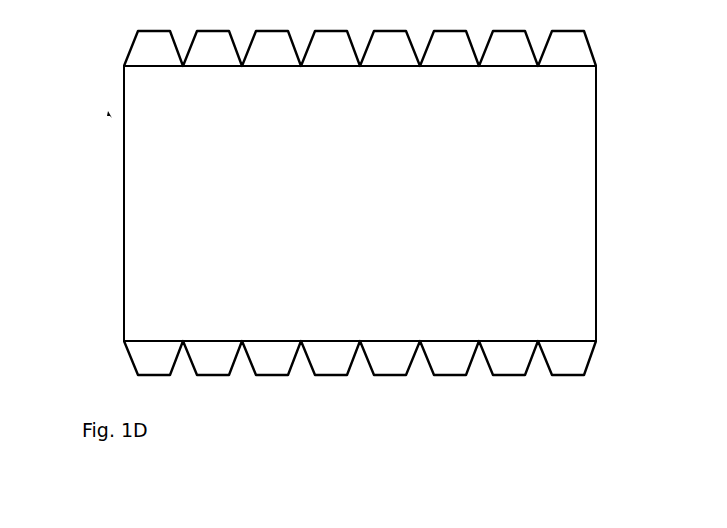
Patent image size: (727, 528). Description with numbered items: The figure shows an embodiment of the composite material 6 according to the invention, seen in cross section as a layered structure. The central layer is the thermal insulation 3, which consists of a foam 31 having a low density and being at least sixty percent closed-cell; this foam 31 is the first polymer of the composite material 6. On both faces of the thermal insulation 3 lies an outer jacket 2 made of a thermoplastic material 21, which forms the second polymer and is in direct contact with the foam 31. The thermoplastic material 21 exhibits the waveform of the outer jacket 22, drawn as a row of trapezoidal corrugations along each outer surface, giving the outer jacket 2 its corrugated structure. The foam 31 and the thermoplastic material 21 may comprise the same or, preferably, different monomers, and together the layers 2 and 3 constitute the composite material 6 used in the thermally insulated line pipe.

The outer jacket 2 is at (359, 198).
The thermal insulation 3 is at (358, 203).
The composite material 6 is at (337, 198).
The thermoplastic material 21 is at (172, 47).
The waveform of the outer jacket 22 is at (117, 44).
The foam 31 is at (178, 183).